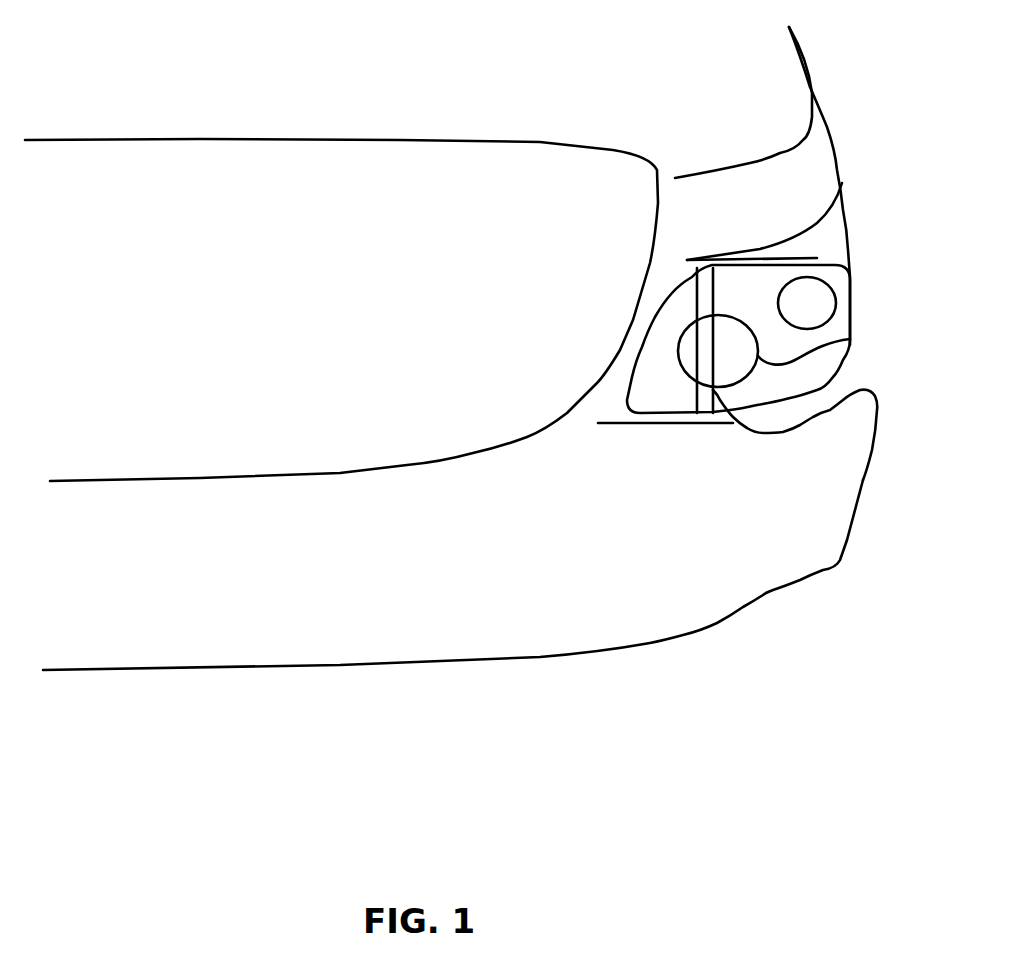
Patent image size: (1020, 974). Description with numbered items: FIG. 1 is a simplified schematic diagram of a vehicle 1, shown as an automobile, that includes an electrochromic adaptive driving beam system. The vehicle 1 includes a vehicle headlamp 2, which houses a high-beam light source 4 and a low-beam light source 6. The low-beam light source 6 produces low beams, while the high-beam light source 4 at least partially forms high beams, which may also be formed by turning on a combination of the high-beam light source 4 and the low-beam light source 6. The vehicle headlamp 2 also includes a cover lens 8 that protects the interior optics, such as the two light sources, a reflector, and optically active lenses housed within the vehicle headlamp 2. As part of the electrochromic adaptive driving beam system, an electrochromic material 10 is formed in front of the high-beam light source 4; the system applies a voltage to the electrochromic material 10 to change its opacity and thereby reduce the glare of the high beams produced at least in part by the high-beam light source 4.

The vehicle 1 is at (553, 680).
The vehicle headlamp 2 is at (868, 278).
The high-beam light source 4 is at (850, 339).
The low-beam light source 6 is at (836, 305).
The cover lens 8 is at (817, 258).
The electrochromic material 10 is at (828, 413).